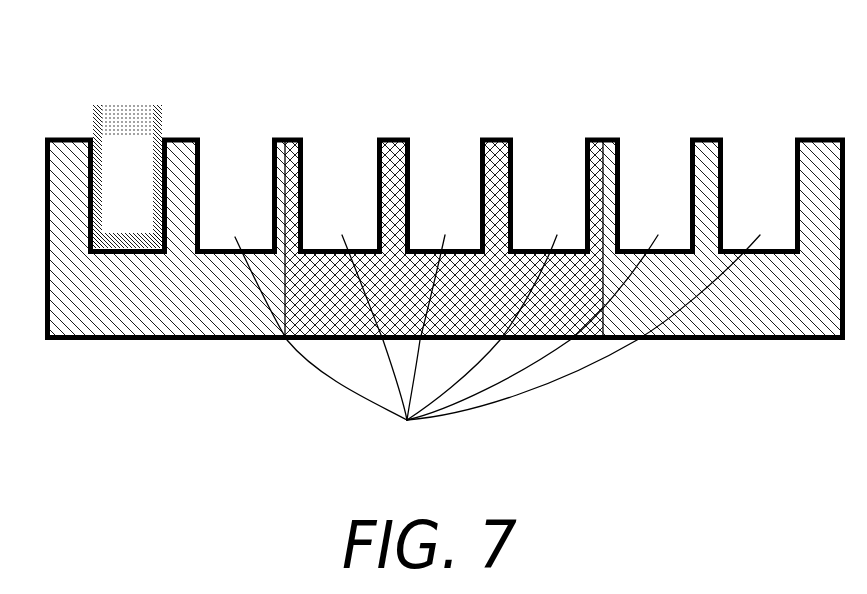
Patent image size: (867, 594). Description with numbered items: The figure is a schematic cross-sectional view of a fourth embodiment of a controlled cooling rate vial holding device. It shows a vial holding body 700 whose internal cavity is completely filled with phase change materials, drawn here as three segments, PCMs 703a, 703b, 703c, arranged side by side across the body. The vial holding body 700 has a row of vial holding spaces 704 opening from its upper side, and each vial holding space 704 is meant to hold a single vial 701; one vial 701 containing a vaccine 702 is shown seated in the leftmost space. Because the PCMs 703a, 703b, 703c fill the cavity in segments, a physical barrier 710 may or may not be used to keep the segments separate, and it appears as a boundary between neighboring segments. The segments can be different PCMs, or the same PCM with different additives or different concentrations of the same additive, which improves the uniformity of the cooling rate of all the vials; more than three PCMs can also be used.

The vial holding body 700 is at (822, 137).
The vial 701 is at (140, 127).
The vaccine 702 is at (125, 235).
The PCM 703a is at (102, 317).
The PCM 703b is at (390, 177).
The PCM 703c is at (782, 320).
The vial holding space 704 is at (497, 341).
The physical barrier 710 is at (288, 137).